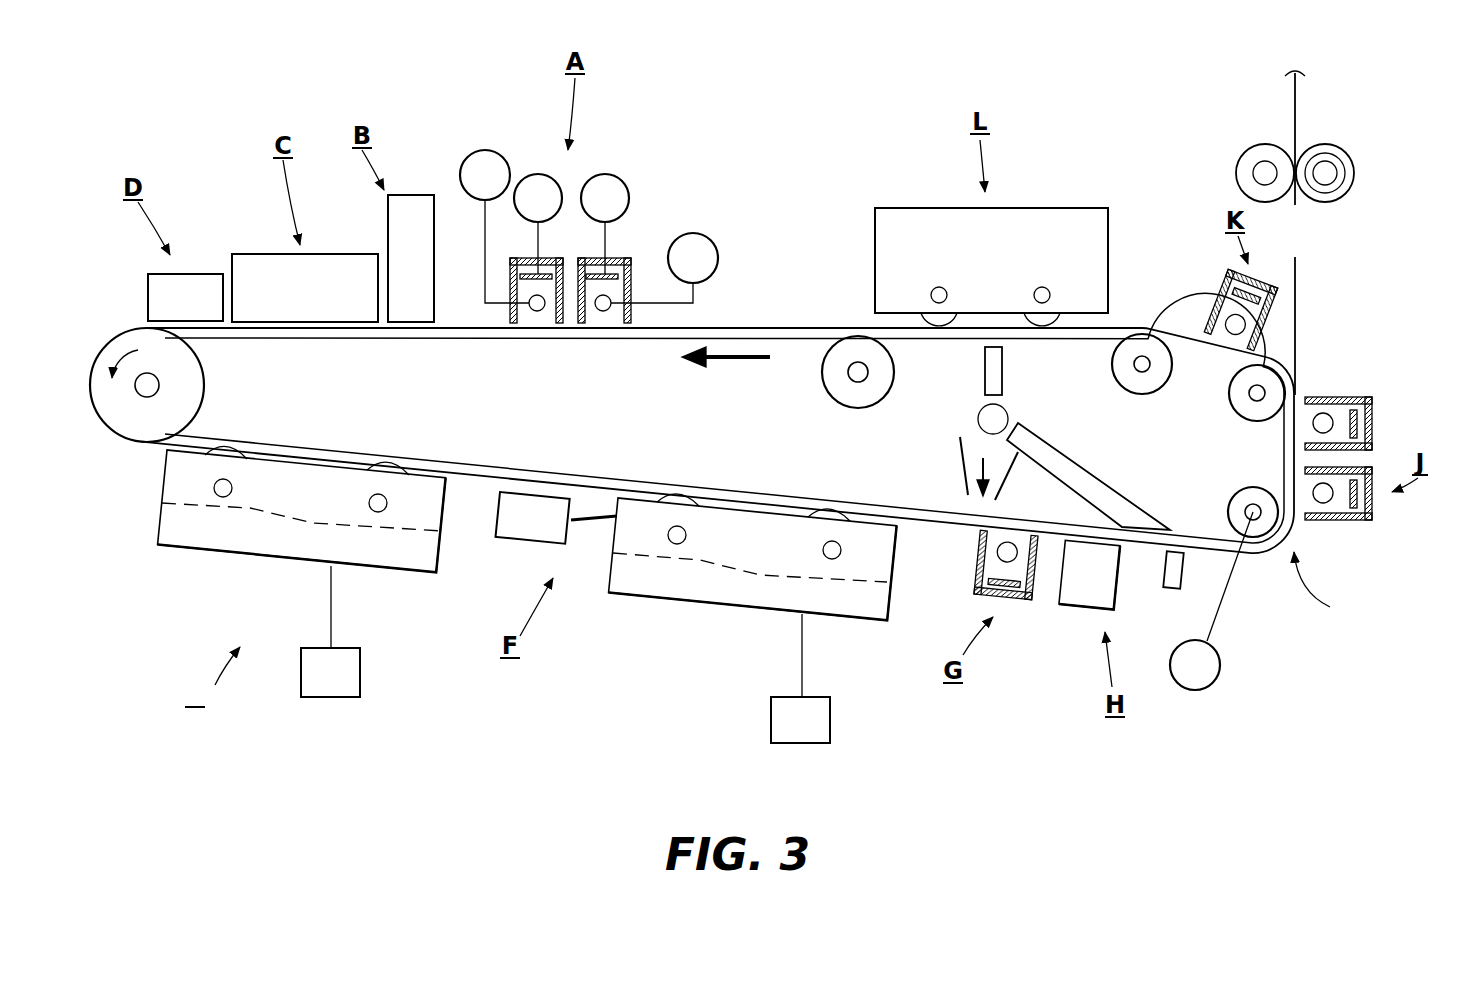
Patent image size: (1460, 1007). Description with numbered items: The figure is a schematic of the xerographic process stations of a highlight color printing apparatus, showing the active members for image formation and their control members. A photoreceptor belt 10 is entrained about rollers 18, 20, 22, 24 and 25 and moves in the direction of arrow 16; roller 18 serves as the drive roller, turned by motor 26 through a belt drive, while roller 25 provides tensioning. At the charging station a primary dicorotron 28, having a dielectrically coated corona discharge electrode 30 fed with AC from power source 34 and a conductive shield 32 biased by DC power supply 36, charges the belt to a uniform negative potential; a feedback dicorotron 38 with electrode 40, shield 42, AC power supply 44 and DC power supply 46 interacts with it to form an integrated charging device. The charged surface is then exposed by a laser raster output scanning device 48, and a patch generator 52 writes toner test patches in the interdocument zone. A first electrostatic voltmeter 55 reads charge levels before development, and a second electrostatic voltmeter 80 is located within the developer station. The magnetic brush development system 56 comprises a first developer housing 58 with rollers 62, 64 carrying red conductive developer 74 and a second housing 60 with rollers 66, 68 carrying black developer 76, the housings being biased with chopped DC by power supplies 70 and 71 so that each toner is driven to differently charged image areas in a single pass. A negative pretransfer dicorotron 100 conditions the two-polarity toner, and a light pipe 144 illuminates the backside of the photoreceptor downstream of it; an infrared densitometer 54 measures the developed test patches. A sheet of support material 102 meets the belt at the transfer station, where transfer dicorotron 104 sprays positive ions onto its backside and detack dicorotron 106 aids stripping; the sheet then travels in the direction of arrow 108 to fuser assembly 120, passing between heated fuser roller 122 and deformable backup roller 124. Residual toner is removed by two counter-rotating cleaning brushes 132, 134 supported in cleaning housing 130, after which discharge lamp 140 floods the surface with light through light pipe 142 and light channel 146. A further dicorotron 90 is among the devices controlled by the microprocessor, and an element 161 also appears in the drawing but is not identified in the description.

The photoreceptor belt 10 is at (765, 326).
The arrow 16 is at (765, 362).
The roller 18 is at (1217, 502).
The roller 20 is at (1245, 400).
The roller 22 is at (1137, 396).
The roller 24 is at (195, 388).
The roller 25 is at (840, 382).
The motor 26 is at (1212, 676).
The dicorotron 28 is at (642, 255).
The corona discharge electrode 30 is at (605, 311).
The conductive shield 32 is at (621, 278).
The power source 34 is at (705, 236).
The DC power supply 36 is at (605, 174).
The feedback dicorotron 38 is at (513, 300).
The dielectrically coated electrode 40 is at (532, 311).
The conductive shield 42 is at (547, 276).
The AC power supply 44 is at (485, 150).
The DC power supply 46 is at (538, 174).
The scanning device 48 is at (388, 236).
The patch generator 52 is at (242, 264).
The Infra-Red densitometer 54 is at (1082, 596).
The electrostatic voltmeter 55 is at (150, 292).
The magnetic brush development system 56 is at (248, 718).
The developer housing structure 58 is at (285, 578).
The developer housing structure 60 is at (758, 578).
The magnetic brush developer roller 62 is at (232, 452).
The magnetic brush developer roller 64 is at (390, 462).
The magnetic brush roller 66 is at (679, 494).
The magnetic brush roller 68 is at (827, 508).
The power supply 70 is at (356, 696).
The power supply 71 is at (823, 720).
The red conductive magnetic brush developer 74 is at (200, 522).
The black magnetic brush developer 76 is at (685, 582).
The electrostatic voltmeter 80 is at (526, 540).
The dicorotron 90 is at (1222, 290).
The pretransfer dicorotron member 100 is at (977, 590).
The sheet of support material 102 is at (1297, 303).
The transfer dicorotron 104 is at (1356, 530).
The detack dicorotron 106 is at (1358, 400).
The arrow 108 is at (1312, 585).
The fuser assembly 120 is at (1288, 233).
The heated fuser roller 122 is at (1250, 162).
The backup roller 124 is at (1338, 152).
The cleaning housing 130 is at (965, 268).
The cleaning brush 132 is at (938, 322).
The cleaning brush 134 is at (1052, 322).
The discharge lamp 140 is at (992, 420).
The light pipe 142 is at (1000, 380).
The light pipe 144 is at (1100, 492).
The light channel 146 is at (960, 472).
The light shield plate 161 is at (1171, 592).